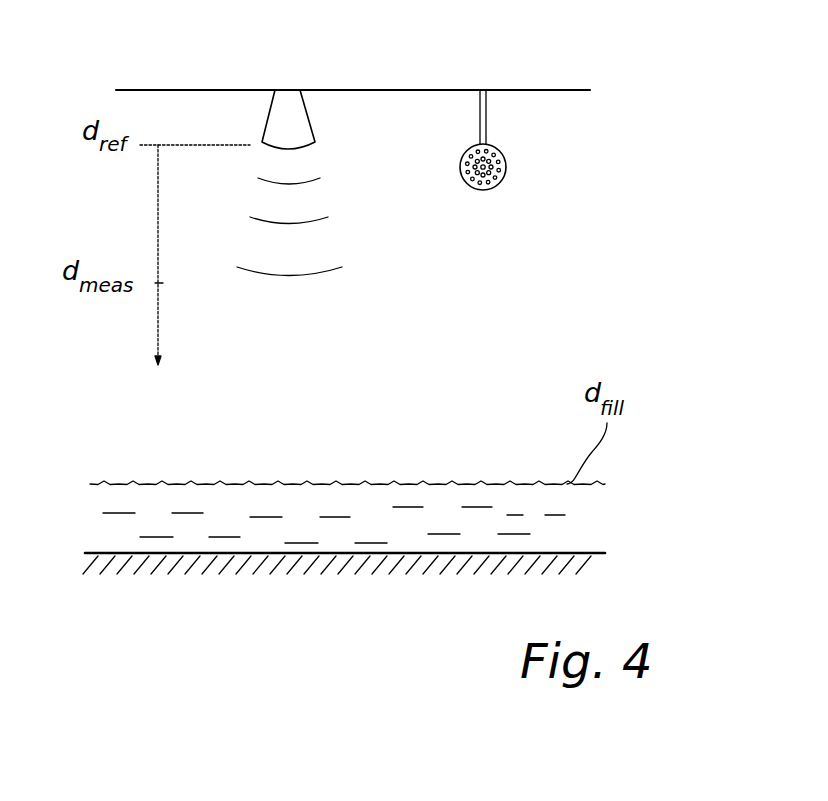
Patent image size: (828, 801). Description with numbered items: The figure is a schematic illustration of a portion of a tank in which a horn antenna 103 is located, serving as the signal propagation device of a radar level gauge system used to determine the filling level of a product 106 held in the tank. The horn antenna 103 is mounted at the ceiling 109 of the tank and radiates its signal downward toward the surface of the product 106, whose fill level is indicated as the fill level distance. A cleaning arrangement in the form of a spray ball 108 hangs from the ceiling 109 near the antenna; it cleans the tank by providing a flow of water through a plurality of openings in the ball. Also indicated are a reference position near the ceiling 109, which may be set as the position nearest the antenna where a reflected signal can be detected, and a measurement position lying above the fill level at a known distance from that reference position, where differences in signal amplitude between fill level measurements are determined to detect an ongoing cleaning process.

The ceiling 109 is at (200, 90).
The horn antenna 103 is at (298, 118).
The spray ball 108 is at (506, 157).
The product 106 is at (372, 507).